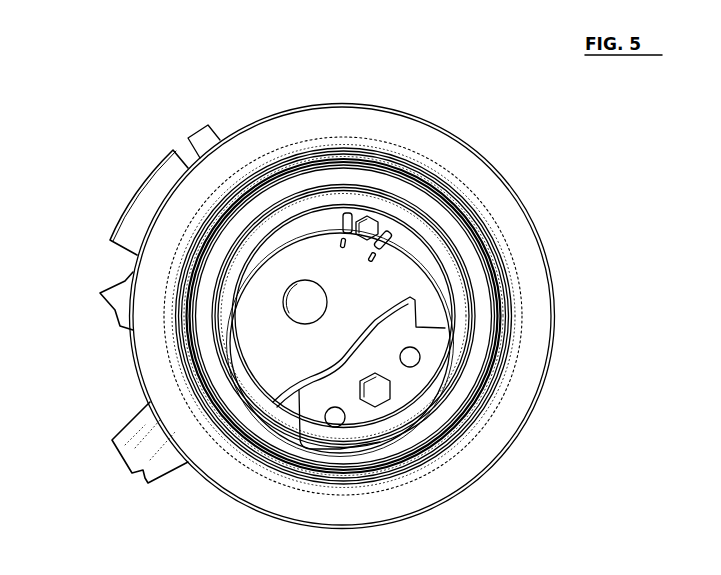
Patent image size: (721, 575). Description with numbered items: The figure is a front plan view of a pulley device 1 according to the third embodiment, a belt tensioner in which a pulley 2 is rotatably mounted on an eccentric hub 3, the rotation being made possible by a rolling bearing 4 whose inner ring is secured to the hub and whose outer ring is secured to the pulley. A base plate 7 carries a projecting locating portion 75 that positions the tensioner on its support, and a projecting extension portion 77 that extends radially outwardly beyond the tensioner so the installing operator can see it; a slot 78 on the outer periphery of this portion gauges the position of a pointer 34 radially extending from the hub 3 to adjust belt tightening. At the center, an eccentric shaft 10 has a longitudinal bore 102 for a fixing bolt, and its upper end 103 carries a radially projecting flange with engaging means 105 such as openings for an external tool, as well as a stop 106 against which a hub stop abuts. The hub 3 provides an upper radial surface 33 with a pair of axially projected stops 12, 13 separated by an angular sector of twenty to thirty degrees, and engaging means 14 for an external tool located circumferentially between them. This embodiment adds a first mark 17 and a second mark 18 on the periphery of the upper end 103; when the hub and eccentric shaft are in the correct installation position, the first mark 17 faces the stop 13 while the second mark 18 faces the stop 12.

The pulley device 1 is at (118, 130).
The pulley 2 is at (240, 487).
The eccentric hub 3 is at (490, 343).
The rolling bearing 4 is at (397, 456).
The base plate 7 is at (104, 232).
The eccentric shaft 10 is at (272, 252).
The hub stop 12 is at (473, 193).
The hub stop 13 is at (369, 214).
The engaging means 14 is at (428, 153).
The first mark 17 is at (346, 212).
The second mark 18 is at (442, 303).
The upper radial surface 33 is at (297, 205).
The pointer 34 is at (98, 296).
The projecting locating portion 75 is at (145, 483).
The projecting extension portion 77 is at (130, 190).
The slot 78 is at (165, 165).
The longitudinal bore 102 is at (283, 317).
The upper end 103 is at (490, 262).
The engaging means 105 is at (420, 467).
The stop 106 is at (470, 357).